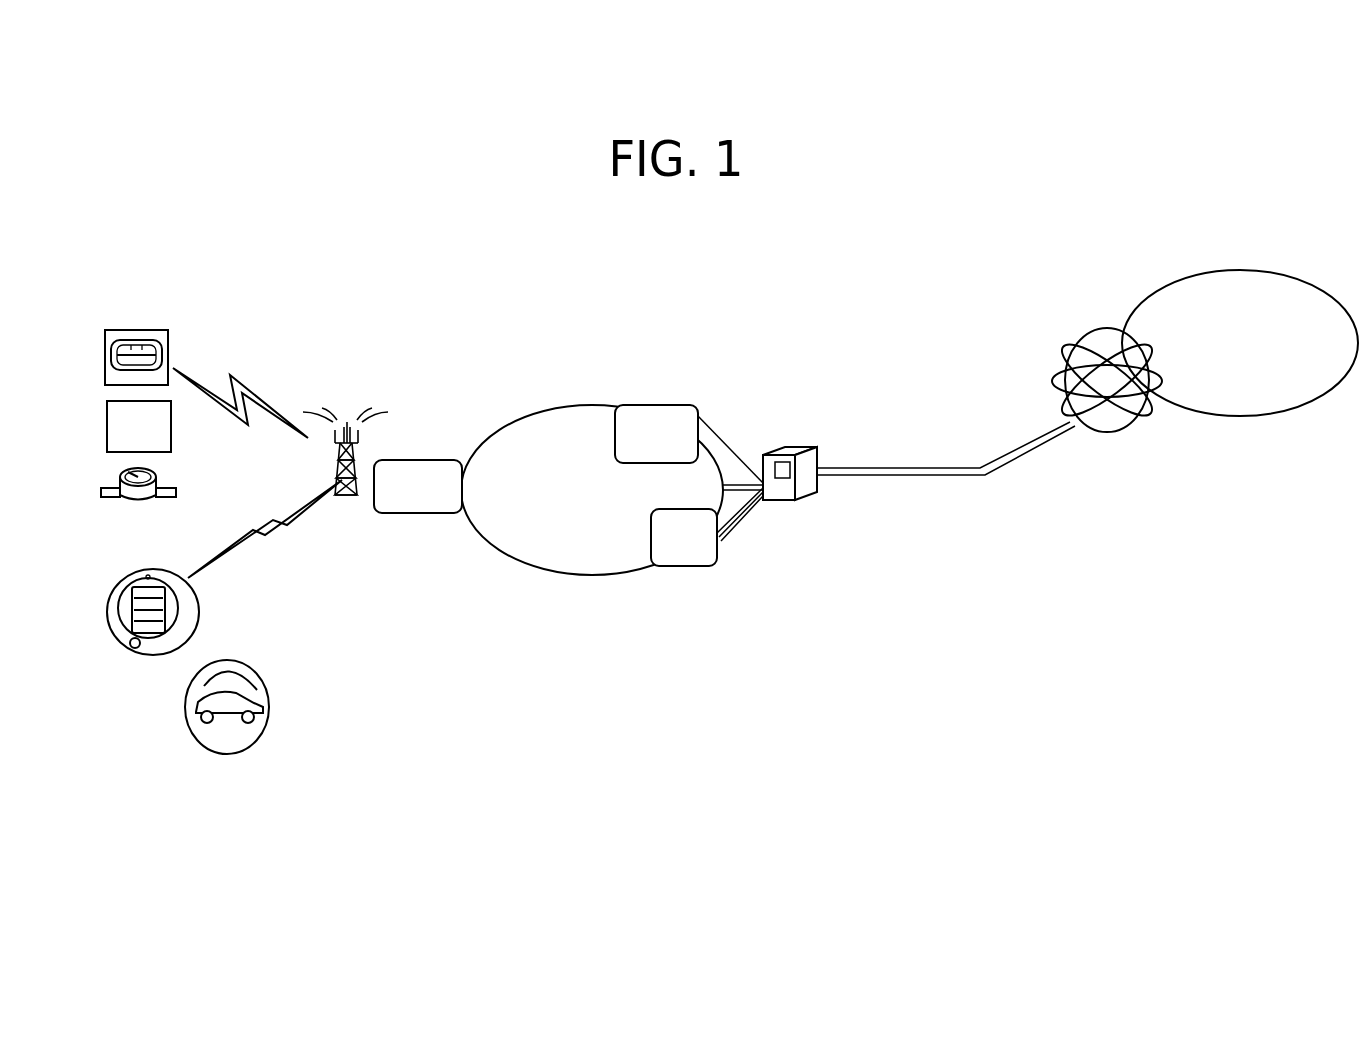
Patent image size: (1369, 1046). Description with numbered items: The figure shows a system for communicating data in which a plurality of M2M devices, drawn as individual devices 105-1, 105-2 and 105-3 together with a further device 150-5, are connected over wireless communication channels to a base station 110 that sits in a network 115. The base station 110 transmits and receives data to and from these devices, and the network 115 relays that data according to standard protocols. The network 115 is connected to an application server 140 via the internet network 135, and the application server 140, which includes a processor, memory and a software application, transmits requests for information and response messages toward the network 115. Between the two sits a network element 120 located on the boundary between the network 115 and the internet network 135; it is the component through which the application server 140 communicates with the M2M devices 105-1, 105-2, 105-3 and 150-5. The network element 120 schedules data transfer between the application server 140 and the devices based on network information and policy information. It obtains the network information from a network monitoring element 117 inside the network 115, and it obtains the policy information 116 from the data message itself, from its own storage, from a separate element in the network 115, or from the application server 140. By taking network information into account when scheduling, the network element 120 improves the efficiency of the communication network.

The M2M device 105-1 is at (130, 331).
The M2M device 105-2 is at (172, 435).
The M2M device 105-3 is at (140, 500).
The vehicle fuel gauge device 150-5 is at (187, 702).
The base station 110 is at (347, 422).
The network 115 is at (518, 399).
The policy information 116 is at (660, 403).
The network monitoring element 117 is at (675, 567).
The network element 120 is at (800, 447).
The internet network 135 is at (1083, 337).
The application server 140 is at (1233, 268).